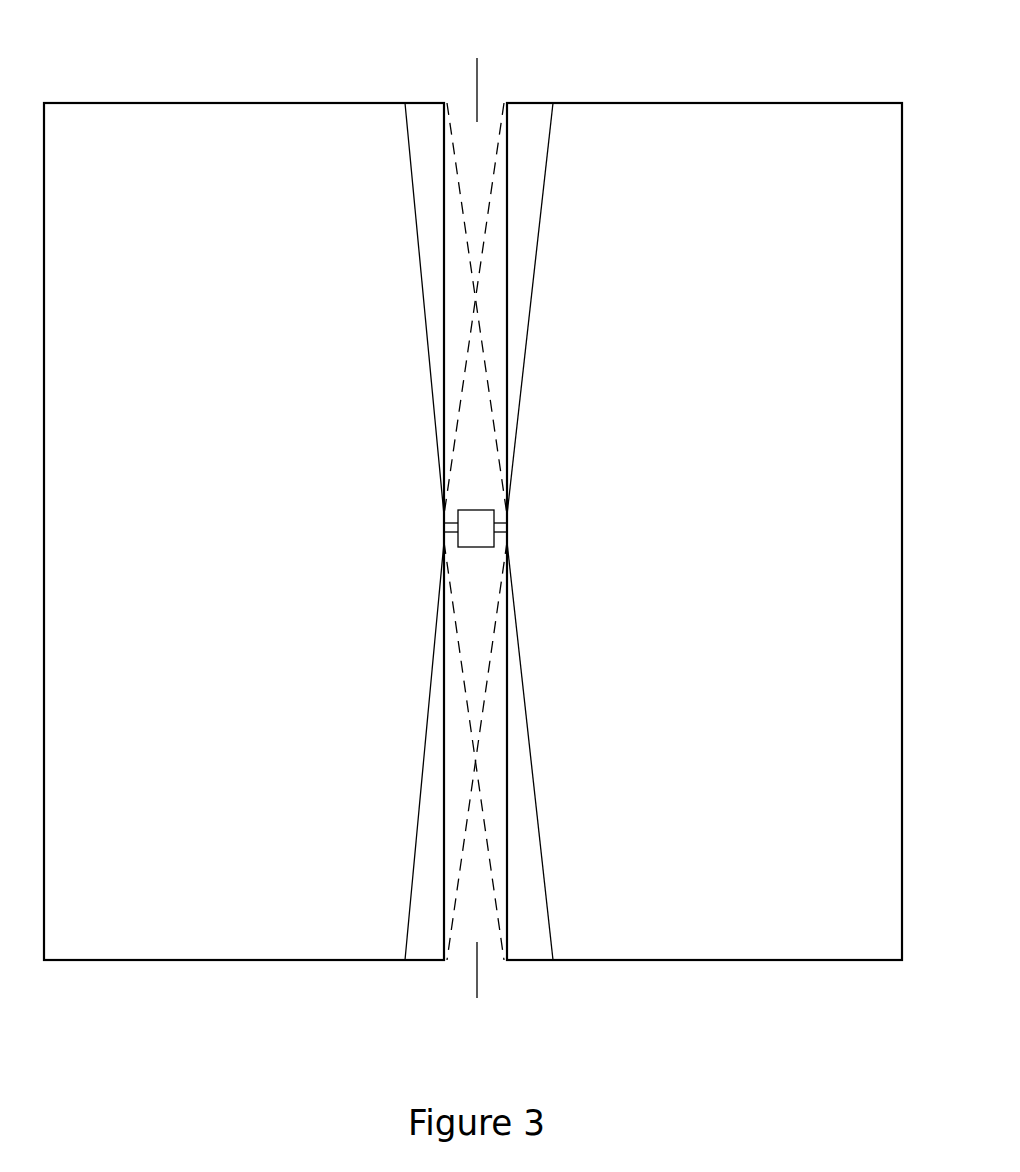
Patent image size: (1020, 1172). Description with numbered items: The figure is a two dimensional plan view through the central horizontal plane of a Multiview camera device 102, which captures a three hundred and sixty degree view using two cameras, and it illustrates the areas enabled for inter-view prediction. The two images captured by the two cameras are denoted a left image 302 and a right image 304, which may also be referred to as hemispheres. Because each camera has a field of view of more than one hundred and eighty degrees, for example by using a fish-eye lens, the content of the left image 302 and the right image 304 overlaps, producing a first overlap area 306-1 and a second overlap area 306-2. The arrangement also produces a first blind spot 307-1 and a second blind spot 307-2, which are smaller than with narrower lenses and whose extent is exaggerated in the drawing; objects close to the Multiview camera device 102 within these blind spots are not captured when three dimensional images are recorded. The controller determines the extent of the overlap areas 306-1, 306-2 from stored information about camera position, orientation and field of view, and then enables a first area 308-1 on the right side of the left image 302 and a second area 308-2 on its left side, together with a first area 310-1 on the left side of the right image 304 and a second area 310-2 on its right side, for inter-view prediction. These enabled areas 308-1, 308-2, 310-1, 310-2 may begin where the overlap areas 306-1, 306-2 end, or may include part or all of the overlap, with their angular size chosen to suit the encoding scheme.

The Multiview camera device 102 is at (482, 530).
The left image 302 is at (210, 903).
The right image 304 is at (729, 915).
The first overlap area 306-1 is at (483, 137).
The second overlap area 306-2 is at (477, 915).
The first blind spot 307-1 is at (475, 460).
The second blind spot 307-2 is at (480, 598).
The first area of the left image enabled for inter-view prediction 308-1 is at (433, 147).
The second area of the left image enabled for inter-view prediction 308-2 is at (432, 878).
The first area of the right image enabled for inter-view prediction 310-1 is at (523, 142).
The second area of the right image enabled for inter-view prediction 310-2 is at (530, 875).